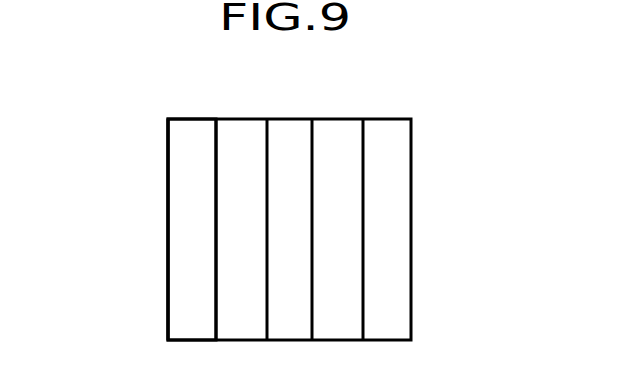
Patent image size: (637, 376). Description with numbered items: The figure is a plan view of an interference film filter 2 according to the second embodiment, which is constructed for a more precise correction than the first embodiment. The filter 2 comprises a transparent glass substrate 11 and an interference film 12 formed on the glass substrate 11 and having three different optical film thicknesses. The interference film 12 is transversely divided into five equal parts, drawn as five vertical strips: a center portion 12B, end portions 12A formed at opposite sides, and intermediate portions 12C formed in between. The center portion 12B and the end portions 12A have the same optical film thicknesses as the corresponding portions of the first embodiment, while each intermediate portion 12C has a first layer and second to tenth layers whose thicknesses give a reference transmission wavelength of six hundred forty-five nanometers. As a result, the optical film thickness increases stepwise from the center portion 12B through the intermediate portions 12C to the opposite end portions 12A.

The interference film filter 2 is at (419, 124).
The transparent glass substrate 11 is at (194, 156).
The interference film 12 is at (194, 202).
The end portions 12A is at (182, 317).
The center portion 12B is at (298, 210).
The intermediate portions 12C is at (232, 245).